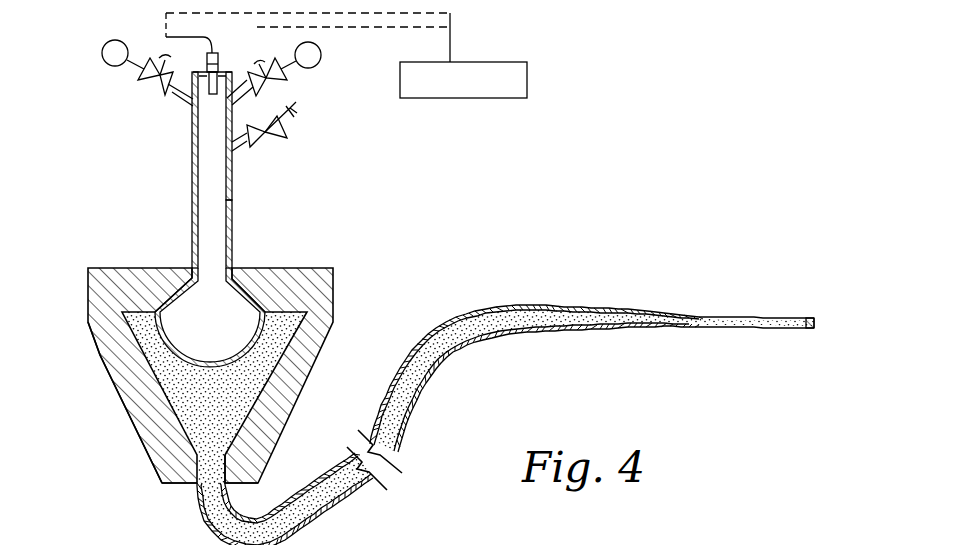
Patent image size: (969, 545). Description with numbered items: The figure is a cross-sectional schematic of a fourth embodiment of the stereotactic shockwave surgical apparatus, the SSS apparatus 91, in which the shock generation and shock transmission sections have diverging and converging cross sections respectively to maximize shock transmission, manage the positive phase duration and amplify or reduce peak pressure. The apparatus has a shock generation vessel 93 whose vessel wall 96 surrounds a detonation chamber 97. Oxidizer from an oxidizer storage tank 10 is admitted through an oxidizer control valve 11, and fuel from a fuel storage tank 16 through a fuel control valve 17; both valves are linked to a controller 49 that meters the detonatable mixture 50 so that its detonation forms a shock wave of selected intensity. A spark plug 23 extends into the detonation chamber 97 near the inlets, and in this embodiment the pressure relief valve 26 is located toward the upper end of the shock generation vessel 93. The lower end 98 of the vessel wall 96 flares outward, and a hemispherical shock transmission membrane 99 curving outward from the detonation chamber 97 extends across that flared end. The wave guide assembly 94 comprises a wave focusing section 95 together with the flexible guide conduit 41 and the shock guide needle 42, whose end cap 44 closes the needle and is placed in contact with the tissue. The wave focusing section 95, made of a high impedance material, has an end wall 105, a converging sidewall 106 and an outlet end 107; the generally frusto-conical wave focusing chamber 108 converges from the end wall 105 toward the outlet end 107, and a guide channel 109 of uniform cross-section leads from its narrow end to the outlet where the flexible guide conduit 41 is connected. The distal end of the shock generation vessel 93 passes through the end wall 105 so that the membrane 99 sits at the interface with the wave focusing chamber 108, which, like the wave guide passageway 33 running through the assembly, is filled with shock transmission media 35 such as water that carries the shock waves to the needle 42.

The oxidizer storage tank 10 is at (321, 55).
The oxidizer control valve 11 is at (287, 84).
The fuel storage tank 16 is at (102, 57).
The fuel control valve 17 is at (160, 88).
The spark plug 23 is at (219, 62).
The pressure relief valve 26 is at (280, 140).
The wave guide passageway 33 is at (208, 522).
The shock transmission media 35 is at (593, 378).
The flexible guide conduit 41 is at (418, 421).
The shock guide needle 42 is at (758, 319).
The end cap 44 is at (816, 332).
The controller 49 is at (527, 68).
The detonatable mixture 50 is at (223, 170).
The SSS apparatus 91 is at (506, 123).
The shock generation vessel 93 is at (240, 180).
The wave guide assembly 94 is at (481, 398).
The wave focusing section 95 is at (236, 353).
The vessel wall 96 is at (232, 238).
The detonation chamber 97 is at (190, 190).
The flared lower end 98 is at (156, 313).
The shock transmission membrane 99 is at (250, 352).
The end wall 105 is at (118, 280).
The converging sidewall 106 is at (133, 381).
The outlet end 107 is at (163, 477).
The wave focusing chamber 108 is at (262, 392).
The guide channel 109 is at (232, 467).